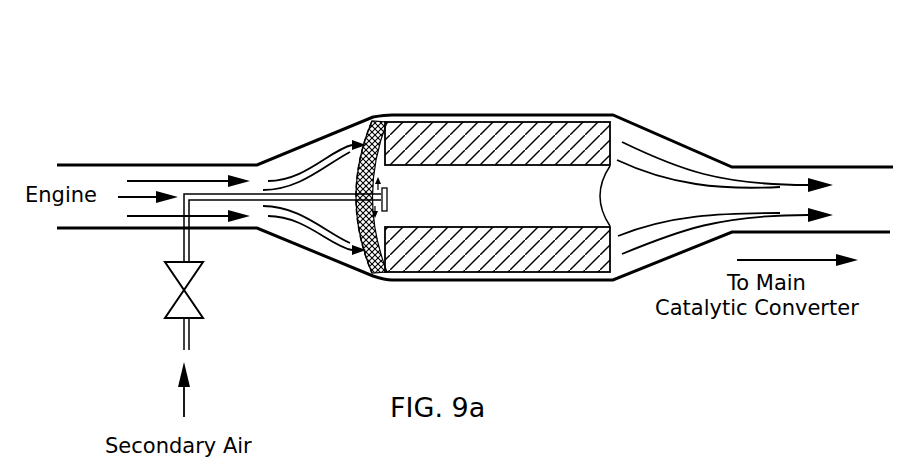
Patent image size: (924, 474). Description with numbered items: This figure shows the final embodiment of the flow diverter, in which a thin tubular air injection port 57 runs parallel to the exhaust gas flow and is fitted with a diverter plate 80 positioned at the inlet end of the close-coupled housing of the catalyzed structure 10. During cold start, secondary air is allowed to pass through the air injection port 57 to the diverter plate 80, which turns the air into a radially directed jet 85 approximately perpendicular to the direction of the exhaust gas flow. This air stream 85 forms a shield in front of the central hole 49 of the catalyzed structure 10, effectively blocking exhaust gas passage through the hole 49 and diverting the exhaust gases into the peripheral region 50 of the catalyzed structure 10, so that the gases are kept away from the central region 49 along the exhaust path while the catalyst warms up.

The catalyzed structure 10 is at (562, 205).
The central hole 49 is at (588, 195).
The peripheral region 50 is at (520, 250).
The air injection port 57 is at (354, 197).
The diverter plate 80 is at (404, 201).
The radially directed jet 85 is at (386, 122).